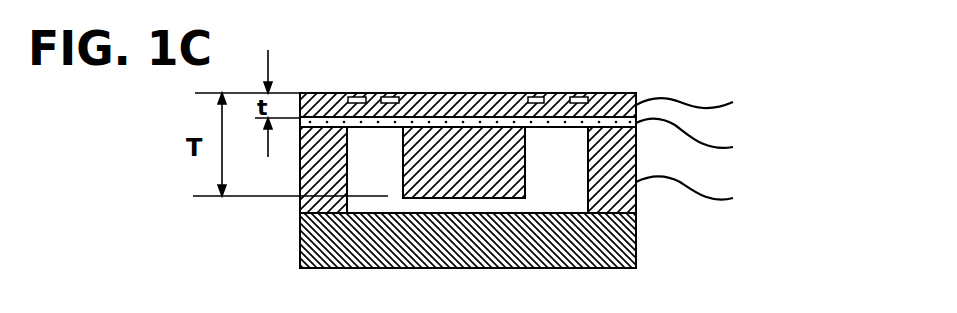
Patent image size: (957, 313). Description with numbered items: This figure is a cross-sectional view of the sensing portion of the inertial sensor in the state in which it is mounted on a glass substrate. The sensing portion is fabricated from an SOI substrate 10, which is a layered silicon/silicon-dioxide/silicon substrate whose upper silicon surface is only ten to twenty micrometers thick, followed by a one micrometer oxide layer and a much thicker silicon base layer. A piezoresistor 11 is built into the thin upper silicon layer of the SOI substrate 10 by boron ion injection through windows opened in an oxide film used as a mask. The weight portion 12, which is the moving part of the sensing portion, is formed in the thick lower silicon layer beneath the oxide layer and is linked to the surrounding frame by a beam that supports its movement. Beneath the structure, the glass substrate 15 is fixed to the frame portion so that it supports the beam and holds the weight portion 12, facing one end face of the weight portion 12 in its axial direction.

The SOI substrate 10 is at (590, 128).
The piezoresistor 11 is at (583, 93).
The weight portion 12 is at (495, 140).
The glass substrate 15 is at (636, 242).